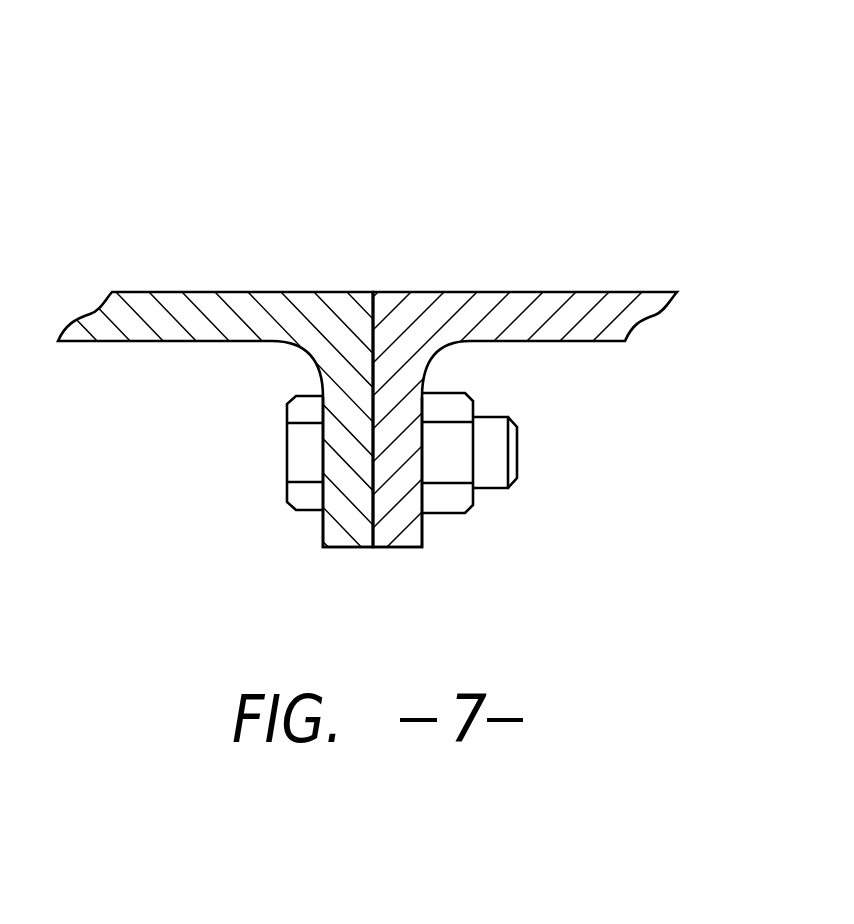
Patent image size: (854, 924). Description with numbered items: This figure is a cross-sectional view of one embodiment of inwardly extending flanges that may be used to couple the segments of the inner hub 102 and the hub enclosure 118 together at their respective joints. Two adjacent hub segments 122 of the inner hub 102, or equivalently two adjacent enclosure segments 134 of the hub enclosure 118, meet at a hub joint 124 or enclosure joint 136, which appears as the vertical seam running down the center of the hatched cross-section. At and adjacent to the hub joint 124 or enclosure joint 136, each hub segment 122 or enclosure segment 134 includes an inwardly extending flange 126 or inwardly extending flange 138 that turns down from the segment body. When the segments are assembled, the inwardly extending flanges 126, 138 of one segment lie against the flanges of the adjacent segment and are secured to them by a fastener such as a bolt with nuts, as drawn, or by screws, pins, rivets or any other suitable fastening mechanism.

The inner hub 102 is at (442, 327).
The hub enclosure 118 is at (442, 327).
The hub segment 122 is at (442, 341).
The enclosure segment 134 is at (202, 302).
The hub joint 124 is at (429, 380).
The enclosure joint 136 is at (373, 313).
The inwardly extending flange 126 is at (373, 505).
The inwardly extending flange 138 is at (440, 590).